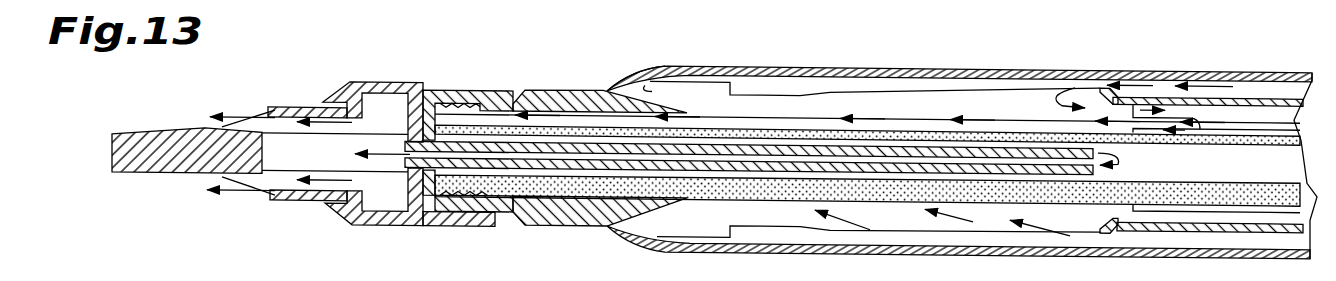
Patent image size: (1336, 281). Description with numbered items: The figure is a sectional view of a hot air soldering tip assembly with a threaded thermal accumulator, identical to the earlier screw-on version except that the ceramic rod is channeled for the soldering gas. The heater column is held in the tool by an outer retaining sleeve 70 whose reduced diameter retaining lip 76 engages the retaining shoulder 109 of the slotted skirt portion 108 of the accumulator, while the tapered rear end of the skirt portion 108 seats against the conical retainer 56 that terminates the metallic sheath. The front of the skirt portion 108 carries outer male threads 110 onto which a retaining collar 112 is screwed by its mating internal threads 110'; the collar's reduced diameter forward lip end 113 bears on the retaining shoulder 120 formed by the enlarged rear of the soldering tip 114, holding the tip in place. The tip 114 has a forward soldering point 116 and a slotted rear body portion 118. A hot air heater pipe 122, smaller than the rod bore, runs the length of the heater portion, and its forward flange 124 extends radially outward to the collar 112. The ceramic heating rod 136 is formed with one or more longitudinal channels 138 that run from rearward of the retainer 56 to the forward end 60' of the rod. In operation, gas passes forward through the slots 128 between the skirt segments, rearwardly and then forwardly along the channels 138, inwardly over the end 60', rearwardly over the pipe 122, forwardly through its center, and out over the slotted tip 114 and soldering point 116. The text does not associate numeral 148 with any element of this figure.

The conical retainer 56 is at (1115, 84).
The forward end of the rod 60' is at (459, 237).
The outer retaining sleeve 70 is at (878, 66).
The retaining lip 76 is at (612, 87).
The slotted skirt portion 108 is at (932, 82).
The retaining shoulder 109 is at (645, 86).
The male threads 110 is at (597, 74).
The internal threads 110' is at (590, 230).
The retaining collar 112 is at (468, 127).
The forward lip end 113 is at (327, 106).
The soldering tip 114 is at (204, 116).
The forward soldering point 116 is at (150, 182).
The slotted rear body portion 118 is at (289, 197).
The retaining shoulder 120 is at (323, 104).
The hot air heater pipe 122 is at (786, 160).
The flange 124 is at (404, 196).
The slots 128 is at (1000, 104).
The ceramic heating rod 136 is at (1208, 138).
The longitudinal channels 138 is at (884, 116).
The catheter assembly 148 is at (98, 265).